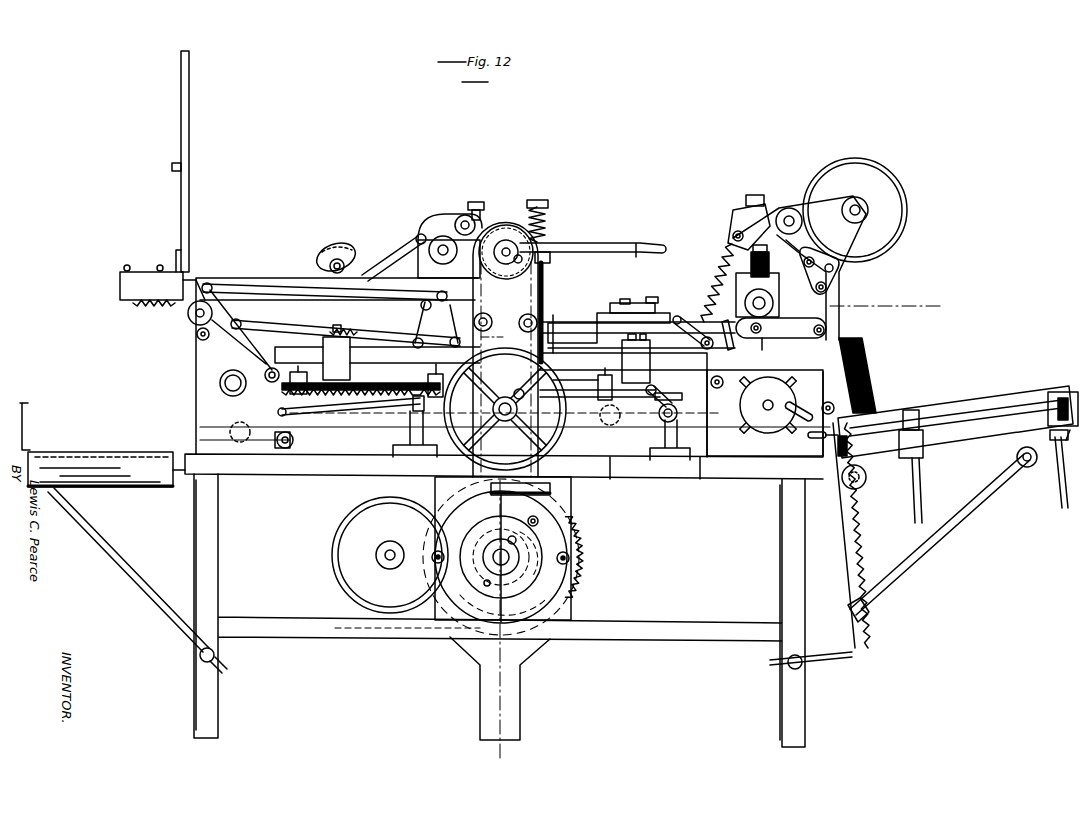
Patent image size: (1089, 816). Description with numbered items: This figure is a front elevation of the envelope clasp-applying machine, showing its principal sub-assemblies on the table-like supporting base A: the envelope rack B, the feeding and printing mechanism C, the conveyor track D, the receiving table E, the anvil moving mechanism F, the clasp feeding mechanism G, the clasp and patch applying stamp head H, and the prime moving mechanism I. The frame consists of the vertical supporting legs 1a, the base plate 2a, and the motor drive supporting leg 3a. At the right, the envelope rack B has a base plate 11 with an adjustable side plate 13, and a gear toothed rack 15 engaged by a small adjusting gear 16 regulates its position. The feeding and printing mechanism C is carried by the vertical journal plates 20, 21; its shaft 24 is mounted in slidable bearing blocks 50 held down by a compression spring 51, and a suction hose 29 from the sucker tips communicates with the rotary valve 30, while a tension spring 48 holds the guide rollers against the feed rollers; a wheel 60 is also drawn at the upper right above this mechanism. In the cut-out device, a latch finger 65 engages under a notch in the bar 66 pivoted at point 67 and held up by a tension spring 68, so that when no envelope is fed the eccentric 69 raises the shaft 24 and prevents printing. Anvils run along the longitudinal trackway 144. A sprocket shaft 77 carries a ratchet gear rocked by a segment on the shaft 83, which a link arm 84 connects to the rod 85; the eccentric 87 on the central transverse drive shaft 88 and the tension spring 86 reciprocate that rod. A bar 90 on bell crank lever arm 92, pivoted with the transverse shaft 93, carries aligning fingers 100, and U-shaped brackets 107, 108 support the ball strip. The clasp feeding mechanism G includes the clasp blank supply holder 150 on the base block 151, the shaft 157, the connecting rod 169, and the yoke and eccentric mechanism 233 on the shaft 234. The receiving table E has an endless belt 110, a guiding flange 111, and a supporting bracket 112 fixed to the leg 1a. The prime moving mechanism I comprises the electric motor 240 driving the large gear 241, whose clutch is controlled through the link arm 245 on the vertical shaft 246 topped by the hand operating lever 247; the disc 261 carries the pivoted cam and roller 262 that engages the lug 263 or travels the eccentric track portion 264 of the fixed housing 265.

The clasp blank supply holder 150 is at (181, 217).
The base block 151 is at (139, 272).
The clasp feeding mechanism G is at (337, 270).
The yoke and eccentric mechanism 233 is at (327, 246).
The shaft 234 is at (328, 268).
The shaft 157 is at (406, 246).
The vertical journal plate 21 is at (481, 207).
The clasp and patch applying stamp head H is at (486, 243).
The hand operating lever 247 is at (578, 248).
The vertical shaft 246 is at (546, 297).
The longitudinal trackway 144 is at (566, 330).
The anvil moving mechanism F is at (605, 313).
The conveyor track D is at (555, 327).
The tension spring 68 is at (712, 268).
The tension spring 48 is at (688, 297).
The gear toothed rack 15 is at (707, 314).
The feeding and printing mechanism C is at (769, 232).
The pulley 60 is at (873, 182).
The compression spring 51 is at (788, 250).
The slidable bearing block 50 is at (772, 272).
The eccentric 69 is at (771, 290).
The shaft 24 is at (766, 302).
The vertical journal plate 20 is at (838, 309).
The pivot point 67 is at (836, 332).
The latch finger 65 is at (729, 341).
The bar 66 is at (766, 336).
The rotary valve 30 is at (772, 385).
The suction hose 29 is at (802, 409).
The envelope rack B is at (950, 410).
The adjustable side plate 13 is at (1023, 400).
The base plate 11 is at (1064, 437).
The small adjusting gear 16 is at (865, 481).
The connecting rod 169 is at (250, 292).
The fingers 100 is at (262, 357).
The U-shaped bracket 108 is at (340, 352).
The U-shaped bracket 107 is at (636, 358).
The tension spring 86 is at (392, 386).
The central transverse drive shaft 88 is at (507, 398).
The bar 90 is at (664, 395).
The bell crank lever arm 92 is at (682, 396).
The transverse shaft 93 is at (677, 414).
The sprocket shaft 77 is at (232, 392).
The rod 85 is at (351, 406).
The link arm 84 is at (240, 432).
The shaft 83 is at (293, 446).
The eccentric 87 is at (609, 415).
The perpendicular guiding flange 111 is at (25, 420).
The receiving table E is at (92, 452).
The endless belt 110 is at (148, 478).
The supporting bracket 112 is at (122, 548).
The vertical supporting leg 1a is at (211, 561).
The electric motor 240 is at (345, 553).
The link arm 245 is at (552, 490).
The supporting base A is at (617, 470).
The base plate 2a is at (690, 470).
The laterally extending lug 263 is at (493, 536).
The pivoted cam and roller 262 is at (540, 523).
The prime moving mechanism I is at (545, 538).
The eccentric track portion 264 is at (590, 560).
The large gear 241 is at (578, 576).
The disc 261 is at (548, 581).
The fixed housing 265 is at (545, 601).
The motor drive supporting leg 3a is at (520, 652).